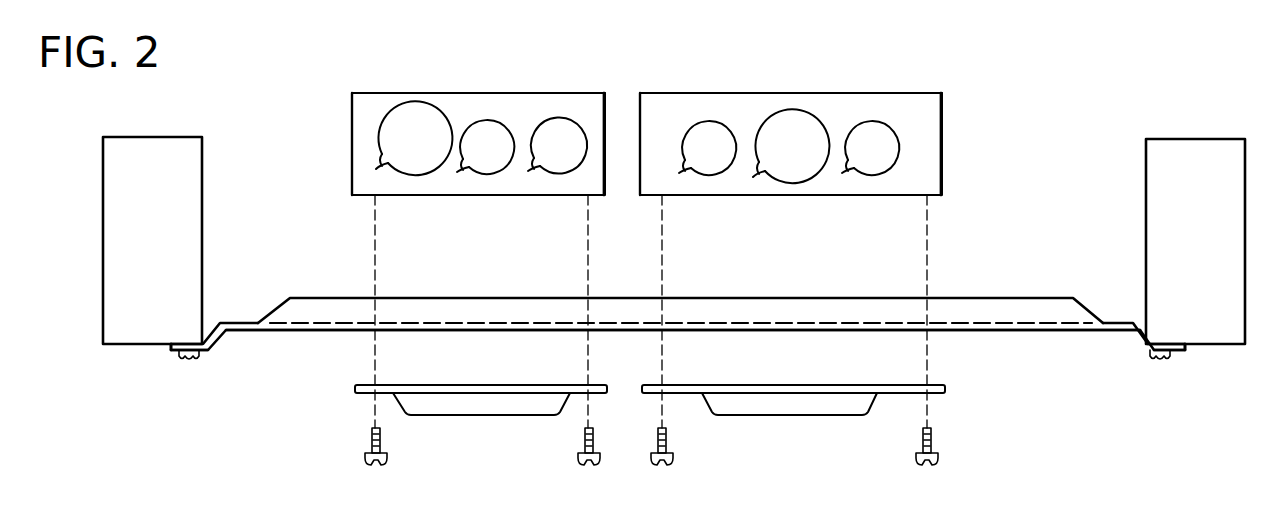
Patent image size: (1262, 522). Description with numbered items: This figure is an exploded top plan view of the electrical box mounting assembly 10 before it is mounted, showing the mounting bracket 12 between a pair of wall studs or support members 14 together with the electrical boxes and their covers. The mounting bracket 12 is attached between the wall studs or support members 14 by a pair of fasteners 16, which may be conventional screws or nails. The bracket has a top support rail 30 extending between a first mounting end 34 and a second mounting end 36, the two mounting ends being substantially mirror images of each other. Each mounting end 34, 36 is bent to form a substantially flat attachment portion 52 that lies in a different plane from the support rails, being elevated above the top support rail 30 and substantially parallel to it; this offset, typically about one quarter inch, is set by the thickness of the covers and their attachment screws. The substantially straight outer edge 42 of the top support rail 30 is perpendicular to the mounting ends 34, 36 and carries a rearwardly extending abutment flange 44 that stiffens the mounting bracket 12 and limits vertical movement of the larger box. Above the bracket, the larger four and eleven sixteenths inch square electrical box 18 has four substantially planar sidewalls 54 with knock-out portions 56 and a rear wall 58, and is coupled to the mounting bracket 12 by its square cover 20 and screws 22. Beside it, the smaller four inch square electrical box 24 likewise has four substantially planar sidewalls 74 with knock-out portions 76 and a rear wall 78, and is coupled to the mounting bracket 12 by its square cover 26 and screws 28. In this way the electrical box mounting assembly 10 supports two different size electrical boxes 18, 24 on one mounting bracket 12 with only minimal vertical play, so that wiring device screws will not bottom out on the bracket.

The electrical box mounting assembly 10 is at (1050, 158).
The mounting bracket 12 is at (672, 328).
The wall studs or support members 14 is at (149, 137).
The fasteners 16 is at (185, 355).
The 4 11/16 inch square electrical box 18 is at (819, 111).
The 4 11/16 inch square cover 20 is at (825, 415).
The screws 22 is at (675, 459).
The 4 inch square electrical box 24 is at (448, 120).
The 4 inch square cover 26 is at (487, 415).
The screws 28 is at (365, 460).
The top support rail 30 is at (298, 333).
The first mounting end 34 is at (237, 322).
The second mounting end 36 is at (1121, 322).
The outer edge 42 is at (448, 320).
The abutment flange 44 is at (1017, 298).
The attachment portion 52 is at (178, 354).
The sidewalls 54 is at (636, 102).
The knock-out portions 56 is at (854, 116).
The rear wall 58 is at (696, 92).
The sidewalls 74 is at (352, 140).
The knock-out portions 76 is at (538, 106).
The rear wall 78 is at (380, 93).